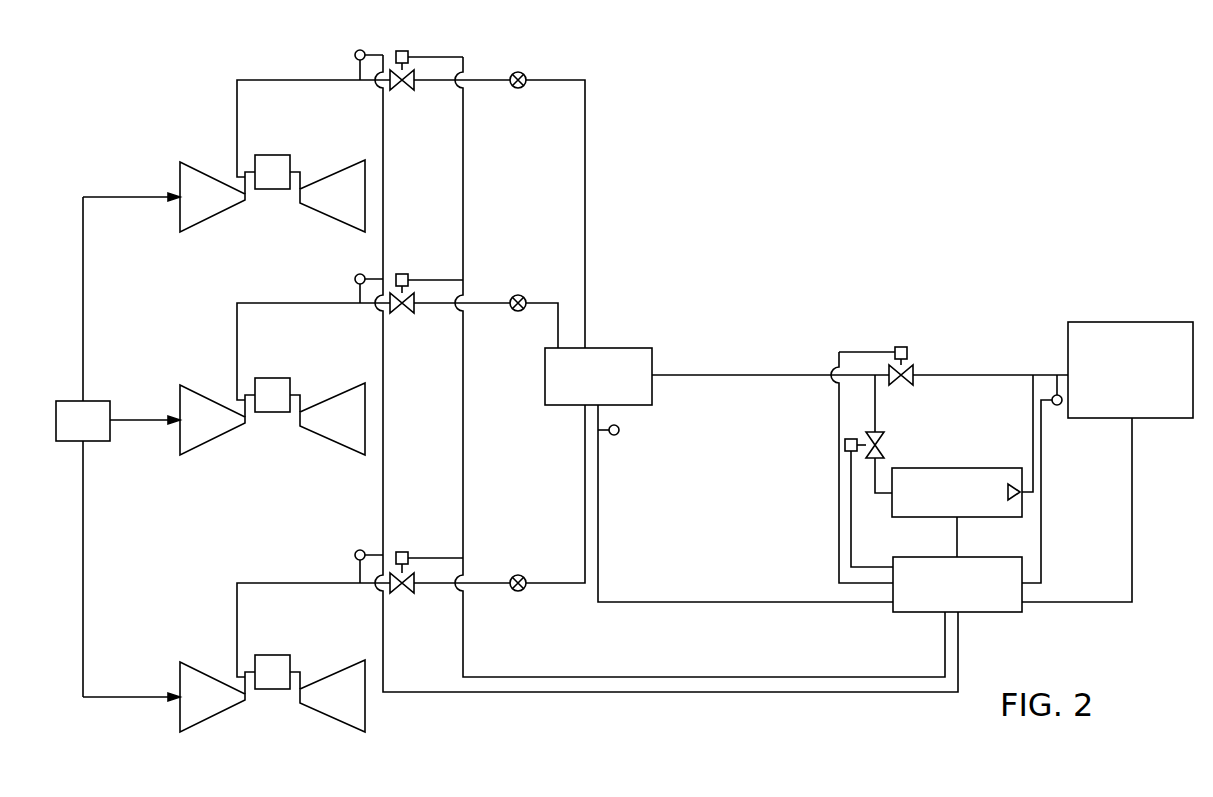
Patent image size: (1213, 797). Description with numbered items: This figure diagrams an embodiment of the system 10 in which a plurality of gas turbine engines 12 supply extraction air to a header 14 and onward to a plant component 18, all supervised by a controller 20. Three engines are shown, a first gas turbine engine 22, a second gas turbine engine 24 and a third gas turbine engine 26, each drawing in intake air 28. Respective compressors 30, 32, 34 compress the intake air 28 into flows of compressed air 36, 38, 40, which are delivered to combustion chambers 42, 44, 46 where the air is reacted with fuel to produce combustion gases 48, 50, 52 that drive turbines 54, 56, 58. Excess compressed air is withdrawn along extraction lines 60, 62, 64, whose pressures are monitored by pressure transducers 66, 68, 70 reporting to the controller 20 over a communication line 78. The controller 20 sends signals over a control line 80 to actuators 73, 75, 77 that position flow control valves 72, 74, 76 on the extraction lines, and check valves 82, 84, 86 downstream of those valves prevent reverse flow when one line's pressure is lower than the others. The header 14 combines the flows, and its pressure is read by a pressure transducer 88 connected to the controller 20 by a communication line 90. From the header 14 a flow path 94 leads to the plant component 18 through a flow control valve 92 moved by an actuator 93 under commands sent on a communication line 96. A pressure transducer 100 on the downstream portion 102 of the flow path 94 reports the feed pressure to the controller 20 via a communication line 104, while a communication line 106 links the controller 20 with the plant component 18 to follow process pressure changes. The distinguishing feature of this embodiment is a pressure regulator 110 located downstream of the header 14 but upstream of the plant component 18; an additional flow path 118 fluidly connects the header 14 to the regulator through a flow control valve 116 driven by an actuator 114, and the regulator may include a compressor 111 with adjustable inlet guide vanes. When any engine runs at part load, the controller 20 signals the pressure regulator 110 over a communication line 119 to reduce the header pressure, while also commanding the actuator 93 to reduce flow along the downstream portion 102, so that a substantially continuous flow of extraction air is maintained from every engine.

The system 10 is at (847, 65).
The gas turbine engines 12 is at (250, 770).
The header 14 is at (619, 347).
The plant component 18 is at (1132, 322).
The controller 20 is at (975, 557).
The first gas turbine engine 22 is at (162, 79).
The second gas turbine engine 24 is at (162, 301).
The third gas turbine engine 26 is at (162, 581).
The intake air 28 is at (97, 401).
The compressor 30 is at (182, 161).
The compressor 32 is at (182, 384).
The compressor 34 is at (182, 661).
The compressed air 36 is at (245, 199).
The compressed air 38 is at (245, 422).
The compressed air 40 is at (245, 699).
The combustion chamber 42 is at (265, 153).
The combustion chamber 44 is at (265, 377).
The combustion chamber 46 is at (265, 654).
The combustion gases 48 is at (298, 171).
The combustion gases 50 is at (313, 392).
The combustion gases 52 is at (298, 671).
The turbine 54 is at (350, 228).
The turbine 56 is at (350, 452).
The turbine 58 is at (350, 729).
The extraction line 60 is at (273, 80).
The extraction line 62 is at (273, 303).
The extraction line 64 is at (273, 583).
The pressure transducer 66 is at (363, 51).
The pressure transducer 68 is at (363, 275).
The pressure transducer 70 is at (360, 549).
The flow control valve 72 is at (400, 92).
The actuator 73 is at (407, 50).
The flow control valve 74 is at (400, 315).
The actuator 75 is at (407, 273).
The flow control valve 76 is at (400, 595).
The actuator 77 is at (407, 551).
The communication line 78 is at (631, 693).
The control line 80 is at (571, 677).
The check valve 82 is at (521, 72).
The check valve 84 is at (521, 295).
The check valve 86 is at (521, 574).
The pressure transducer 88 is at (617, 435).
The communication line 90 is at (700, 602).
The flow control valve 92 is at (912, 367).
The actuator 93 is at (905, 347).
The flow path 94 is at (826, 372).
The communication line 96 is at (839, 516).
The pressure transducer 100 is at (1062, 406).
The downstream portion 102 is at (1015, 313).
The communication line 104 is at (1042, 530).
The communication line 106 is at (1072, 602).
The pressure regulator 110 is at (949, 468).
The compressor 111 is at (1019, 481).
The actuator 114 is at (845, 439).
The flow control valve 116 is at (885, 452).
The additional flow path 118 is at (876, 397).
The communication line 119 is at (857, 565).